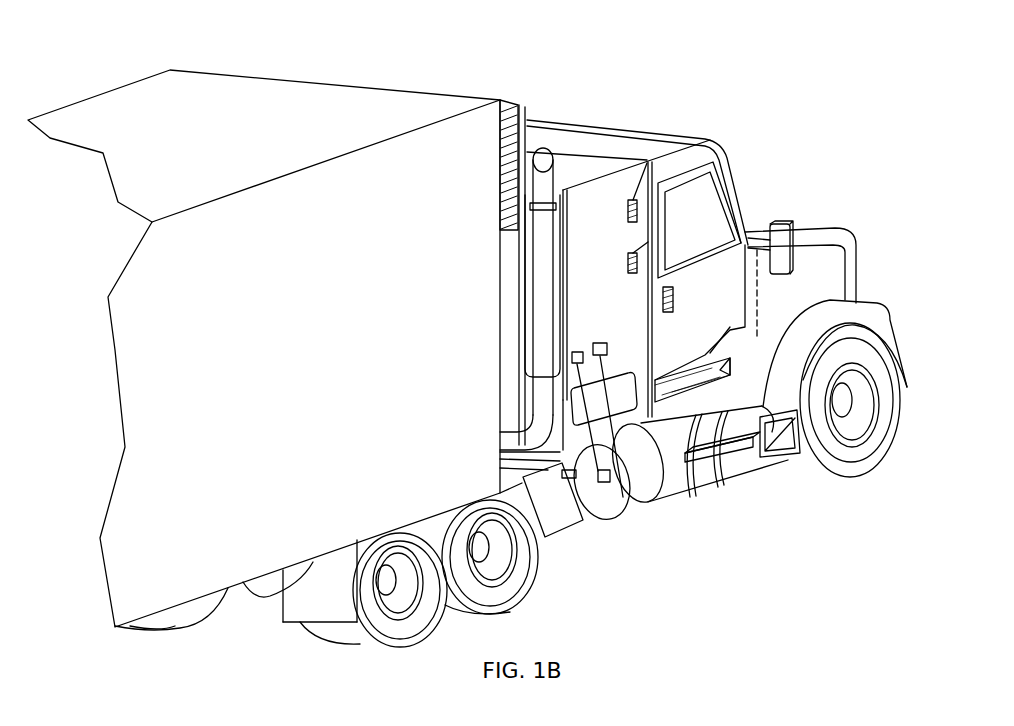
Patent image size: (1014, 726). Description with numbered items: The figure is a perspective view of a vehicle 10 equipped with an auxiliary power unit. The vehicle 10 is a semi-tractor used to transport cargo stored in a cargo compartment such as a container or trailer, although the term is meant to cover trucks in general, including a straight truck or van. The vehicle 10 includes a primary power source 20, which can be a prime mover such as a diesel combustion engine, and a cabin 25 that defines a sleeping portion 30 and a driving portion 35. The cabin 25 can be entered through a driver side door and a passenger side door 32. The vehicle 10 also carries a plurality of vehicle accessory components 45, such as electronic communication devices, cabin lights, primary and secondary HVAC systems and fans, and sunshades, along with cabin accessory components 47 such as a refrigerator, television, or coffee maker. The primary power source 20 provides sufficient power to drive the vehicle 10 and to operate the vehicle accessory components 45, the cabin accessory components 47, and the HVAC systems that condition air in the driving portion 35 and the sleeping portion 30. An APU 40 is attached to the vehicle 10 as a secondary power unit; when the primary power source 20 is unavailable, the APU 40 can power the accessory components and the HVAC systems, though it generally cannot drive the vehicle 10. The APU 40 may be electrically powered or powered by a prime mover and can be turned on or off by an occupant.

The vehicle 10 is at (467, 332).
The primary power source 20 is at (835, 222).
The cabin 25 is at (649, 244).
The sleeping portion 30 is at (580, 157).
The passenger side door 32 is at (755, 218).
The driving portion 35 is at (681, 124).
The APU 40 is at (567, 517).
The vehicle accessory components 45 is at (657, 165).
The cabin accessory components 47 is at (623, 497).